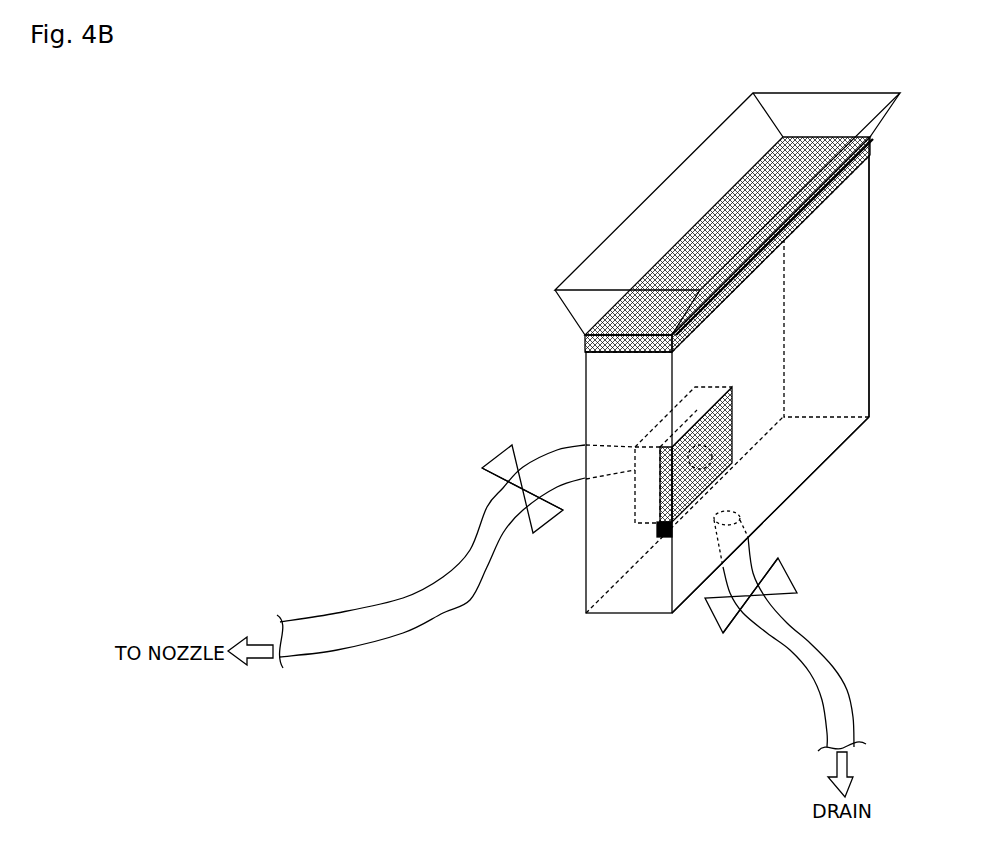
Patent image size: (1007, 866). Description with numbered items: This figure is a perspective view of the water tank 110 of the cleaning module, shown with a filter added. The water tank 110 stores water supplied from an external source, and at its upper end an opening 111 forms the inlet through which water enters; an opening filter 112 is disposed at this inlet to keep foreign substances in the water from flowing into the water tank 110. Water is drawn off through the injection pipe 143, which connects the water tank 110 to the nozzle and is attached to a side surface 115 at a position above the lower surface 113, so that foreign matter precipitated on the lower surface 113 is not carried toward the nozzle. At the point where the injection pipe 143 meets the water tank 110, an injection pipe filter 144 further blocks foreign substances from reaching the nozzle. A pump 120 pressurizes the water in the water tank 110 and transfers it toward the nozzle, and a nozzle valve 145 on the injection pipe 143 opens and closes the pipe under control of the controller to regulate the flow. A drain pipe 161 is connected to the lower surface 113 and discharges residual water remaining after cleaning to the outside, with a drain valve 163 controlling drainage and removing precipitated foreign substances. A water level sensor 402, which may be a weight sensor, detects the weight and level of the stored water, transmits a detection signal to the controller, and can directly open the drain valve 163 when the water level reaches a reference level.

The water tank 110 is at (585, 362).
The hopper inlet 111 is at (692, 225).
The opening filter 112 is at (773, 173).
The lower surface 113 is at (795, 467).
The side surface 115 is at (847, 353).
The pump 120 is at (647, 428).
The injection pipe 143 is at (422, 603).
The injection pipe filter 144 is at (723, 423).
The nozzle valve 145 is at (497, 457).
The drain pipe 161 is at (832, 682).
The drain valve 163 is at (790, 572).
The water level sensor 402 is at (666, 543).